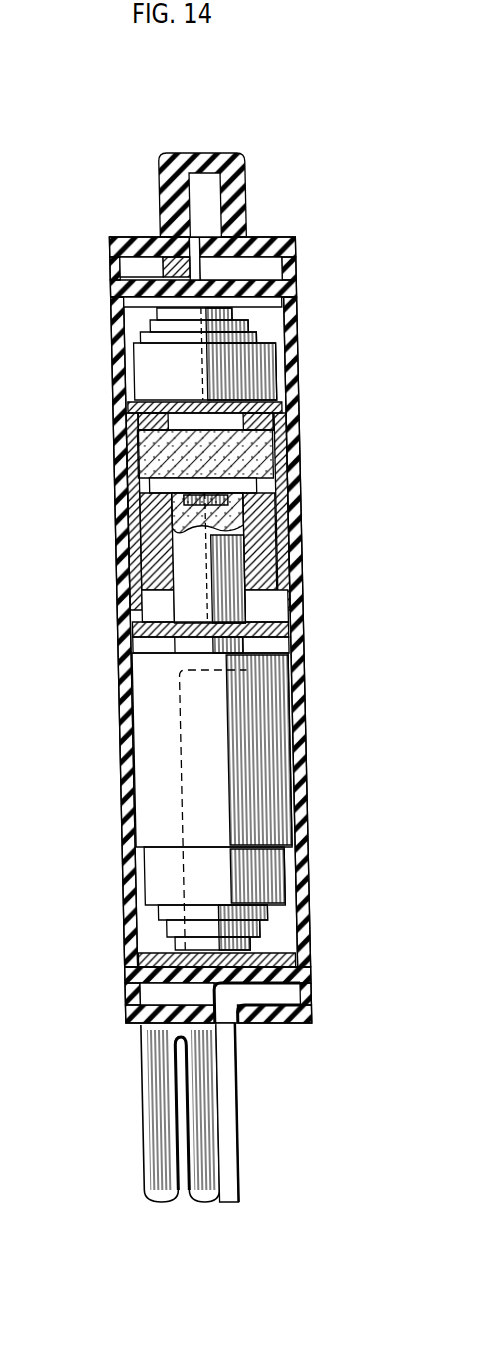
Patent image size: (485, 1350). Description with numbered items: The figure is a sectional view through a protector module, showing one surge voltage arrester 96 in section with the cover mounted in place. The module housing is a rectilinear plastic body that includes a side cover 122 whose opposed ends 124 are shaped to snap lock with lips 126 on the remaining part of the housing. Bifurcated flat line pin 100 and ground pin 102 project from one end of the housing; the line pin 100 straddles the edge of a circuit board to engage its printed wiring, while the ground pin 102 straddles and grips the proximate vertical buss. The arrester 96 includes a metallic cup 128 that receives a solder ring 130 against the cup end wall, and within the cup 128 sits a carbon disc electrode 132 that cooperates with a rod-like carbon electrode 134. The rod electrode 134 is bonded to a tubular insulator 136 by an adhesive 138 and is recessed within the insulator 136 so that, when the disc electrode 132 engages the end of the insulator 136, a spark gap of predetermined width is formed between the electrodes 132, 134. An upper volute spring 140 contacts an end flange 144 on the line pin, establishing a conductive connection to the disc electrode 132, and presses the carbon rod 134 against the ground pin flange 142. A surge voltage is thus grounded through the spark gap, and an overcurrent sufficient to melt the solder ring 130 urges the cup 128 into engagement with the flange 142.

The surge voltage arrester 96 is at (112, 466).
The line pin 100 is at (147, 1200).
The ground pin 102 is at (224, 1180).
The side cover 122 is at (118, 700).
The opposed end 124 is at (190, 255).
The lip 126 is at (139, 277).
The metallic cup 128 is at (278, 455).
The solder ring 130 is at (274, 412).
The carbon disc electrode 132 is at (130, 443).
The carbon electrode 134 is at (236, 578).
The tubular insulator 136 is at (120, 591).
The adhesive 138 is at (264, 513).
The upper volute spring 140 is at (145, 358).
The ground pin flange 142 is at (129, 643).
The end flange 144 is at (276, 302).